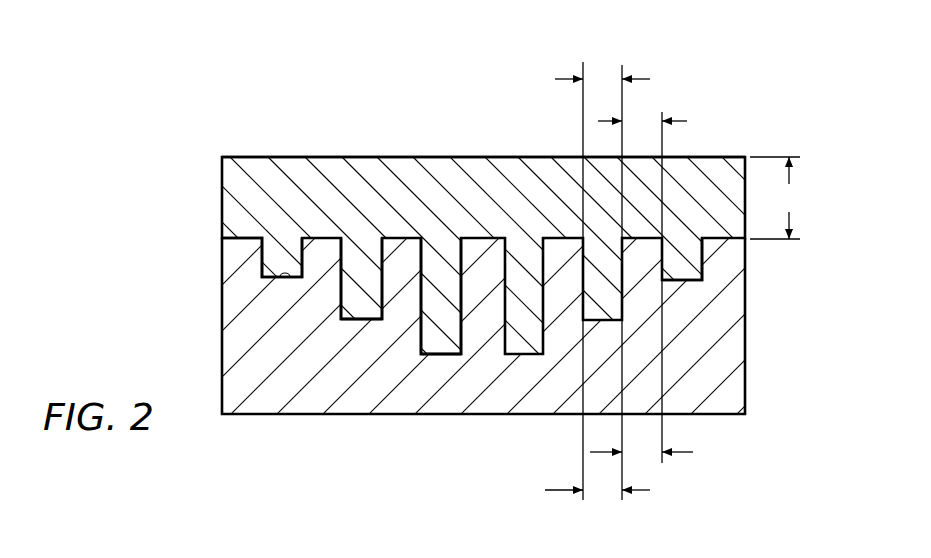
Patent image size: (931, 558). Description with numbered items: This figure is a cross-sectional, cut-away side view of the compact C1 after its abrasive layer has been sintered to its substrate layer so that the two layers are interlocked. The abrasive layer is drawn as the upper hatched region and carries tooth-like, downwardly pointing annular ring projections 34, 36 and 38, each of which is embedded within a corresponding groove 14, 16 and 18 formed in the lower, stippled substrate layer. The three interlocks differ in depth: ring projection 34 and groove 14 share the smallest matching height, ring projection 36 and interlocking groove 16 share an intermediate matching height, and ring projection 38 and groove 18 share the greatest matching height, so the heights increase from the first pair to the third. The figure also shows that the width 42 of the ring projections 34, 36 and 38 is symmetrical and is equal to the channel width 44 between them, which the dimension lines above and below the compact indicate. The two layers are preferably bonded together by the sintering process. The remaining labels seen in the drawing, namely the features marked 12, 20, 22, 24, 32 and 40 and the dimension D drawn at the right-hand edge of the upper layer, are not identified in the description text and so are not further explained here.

The substrate 12 is at (485, 414).
The groove 14 is at (263, 278).
The interlocking groove 16 is at (357, 320).
The groove 18 is at (430, 356).
The fourth surface portion 20 is at (712, 366).
The width of recess 22 is at (598, 491).
The width of projection 24 is at (645, 454).
The top surface of layer 32 is at (275, 156).
The ring projection 34 is at (284, 275).
The ring projection 36 is at (360, 302).
The ring projection 38 is at (440, 340).
The overlying layer 40 is at (518, 188).
The width of the ring projections 42 is at (605, 78).
The channel width 44 is at (647, 119).
The compact C1 is at (170, 188).
The depth of layer D is at (775, 198).